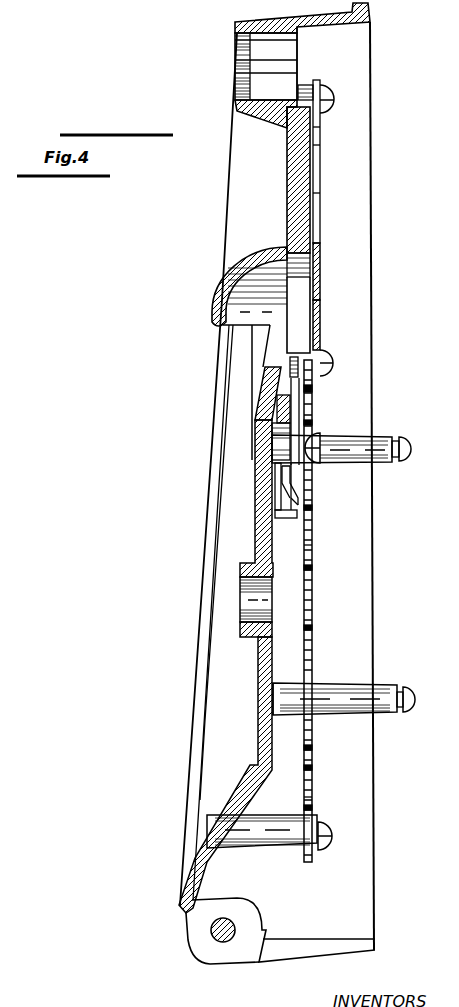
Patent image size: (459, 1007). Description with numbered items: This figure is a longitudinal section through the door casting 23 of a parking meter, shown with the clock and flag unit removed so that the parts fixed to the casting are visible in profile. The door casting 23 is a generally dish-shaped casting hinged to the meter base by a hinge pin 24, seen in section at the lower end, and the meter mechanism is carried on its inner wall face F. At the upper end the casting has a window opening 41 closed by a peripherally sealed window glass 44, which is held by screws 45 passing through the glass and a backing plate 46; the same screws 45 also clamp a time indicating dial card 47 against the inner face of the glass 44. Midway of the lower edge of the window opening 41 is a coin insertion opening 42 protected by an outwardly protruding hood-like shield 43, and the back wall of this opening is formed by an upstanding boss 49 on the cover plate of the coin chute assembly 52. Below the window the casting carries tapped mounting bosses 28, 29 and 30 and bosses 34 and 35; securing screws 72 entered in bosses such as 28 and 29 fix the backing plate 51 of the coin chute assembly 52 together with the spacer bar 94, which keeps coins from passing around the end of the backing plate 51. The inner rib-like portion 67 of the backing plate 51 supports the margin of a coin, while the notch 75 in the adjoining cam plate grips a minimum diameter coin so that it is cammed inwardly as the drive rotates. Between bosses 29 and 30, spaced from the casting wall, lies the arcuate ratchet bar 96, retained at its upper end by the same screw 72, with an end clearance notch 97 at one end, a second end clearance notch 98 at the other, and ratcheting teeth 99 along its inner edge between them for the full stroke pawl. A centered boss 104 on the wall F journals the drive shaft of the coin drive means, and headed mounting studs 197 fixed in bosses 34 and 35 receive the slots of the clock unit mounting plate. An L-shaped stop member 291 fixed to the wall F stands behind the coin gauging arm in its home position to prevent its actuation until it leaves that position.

The door casting 23 is at (224, 210).
The hinge pin 24 is at (222, 942).
The mounting boss 28 is at (275, 412).
The mounting boss 29 is at (267, 453).
The mounting boss 30 is at (288, 848).
The mounting boss 34 is at (381, 463).
The mounting boss 35 is at (383, 713).
The window opening 41 is at (252, 120).
The coin insertion opening 42 is at (268, 332).
The hood-like shield 43 is at (214, 312).
The window glass 44 is at (287, 176).
The screws 45 is at (325, 102).
The backing plate 46 is at (321, 126).
The time indicating dial card 47 is at (321, 145).
The boss 49 is at (314, 292).
The backing plate 51 is at (300, 481).
The coin chute assembly 52 is at (318, 258).
The rib-like portion 67 is at (300, 492).
The securing screws 72 is at (322, 440).
The notch 75 is at (270, 378).
The spacer bar 94 is at (321, 357).
The ratchet bar 96 is at (313, 600).
The end clearance notch 97 is at (306, 420).
The second end clearance notch 98 is at (313, 797).
The ratcheting teeth 99 is at (314, 551).
The centered boss 104 is at (245, 638).
The headed mounting studs 197 is at (410, 442).
The L-shaped stop member 291 is at (282, 519).
The inner wall face F is at (276, 694).